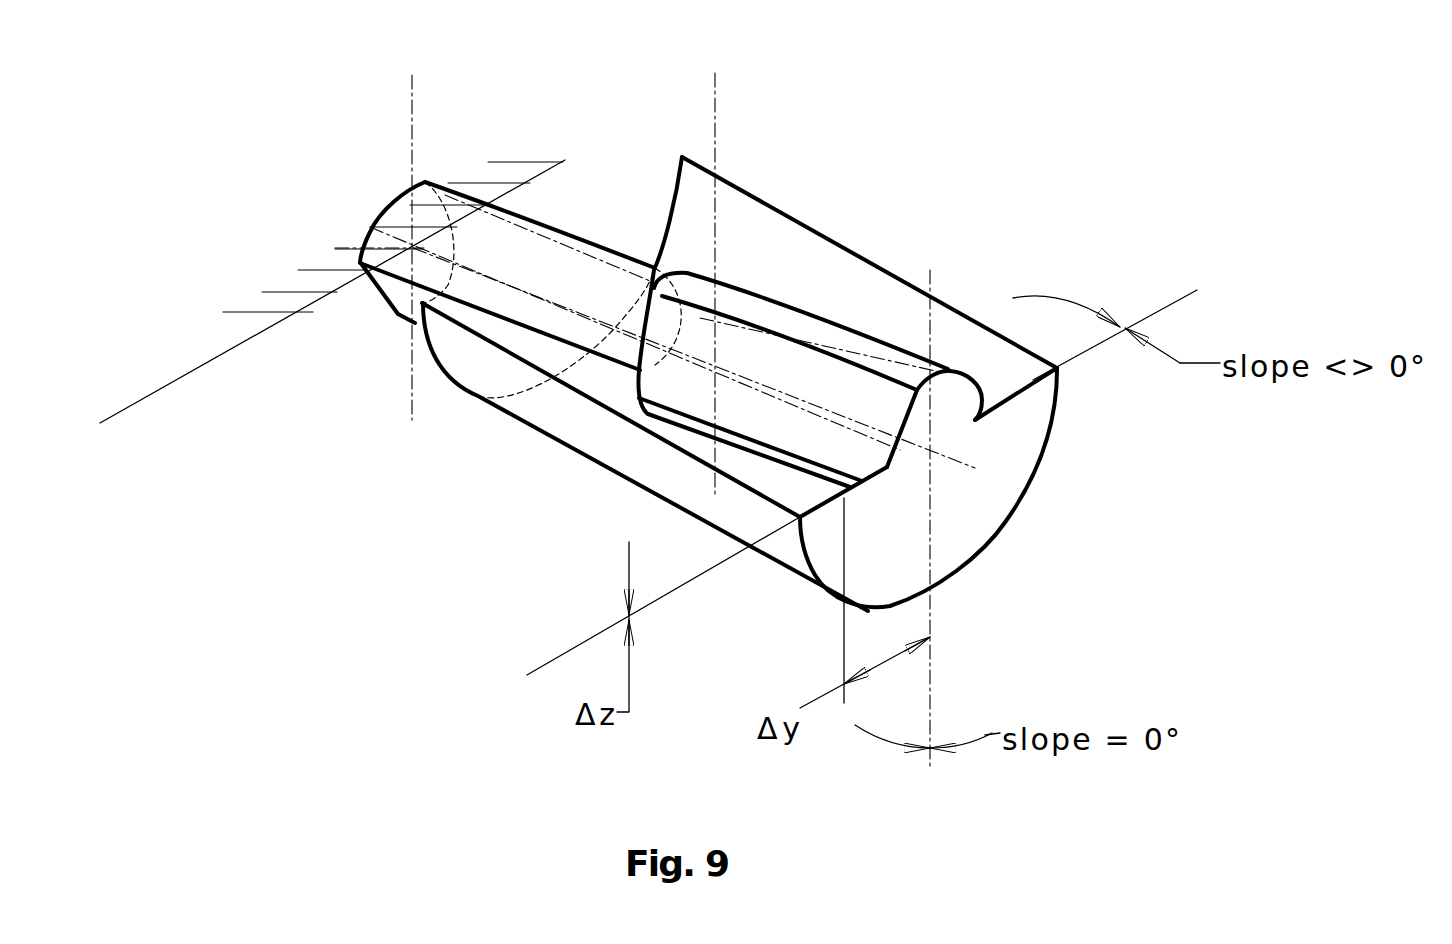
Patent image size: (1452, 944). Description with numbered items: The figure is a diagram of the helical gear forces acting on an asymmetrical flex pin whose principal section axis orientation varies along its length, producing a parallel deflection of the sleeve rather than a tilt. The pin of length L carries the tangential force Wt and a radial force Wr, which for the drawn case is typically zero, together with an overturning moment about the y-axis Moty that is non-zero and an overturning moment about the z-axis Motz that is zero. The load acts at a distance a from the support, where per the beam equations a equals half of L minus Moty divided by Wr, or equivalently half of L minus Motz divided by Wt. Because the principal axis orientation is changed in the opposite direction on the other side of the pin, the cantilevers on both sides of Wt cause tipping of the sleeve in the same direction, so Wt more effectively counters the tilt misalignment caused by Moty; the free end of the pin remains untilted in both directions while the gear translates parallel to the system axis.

The pin length L is at (110, 420).
The tangential force Wt is at (980, 170).
The load position a is at (1180, 299).
The radial force Wr is at (715, 318).
The overturning moment about the y-axis Moty is at (776, 338).
The overturning moment about the z-axis Motz is at (868, 507).